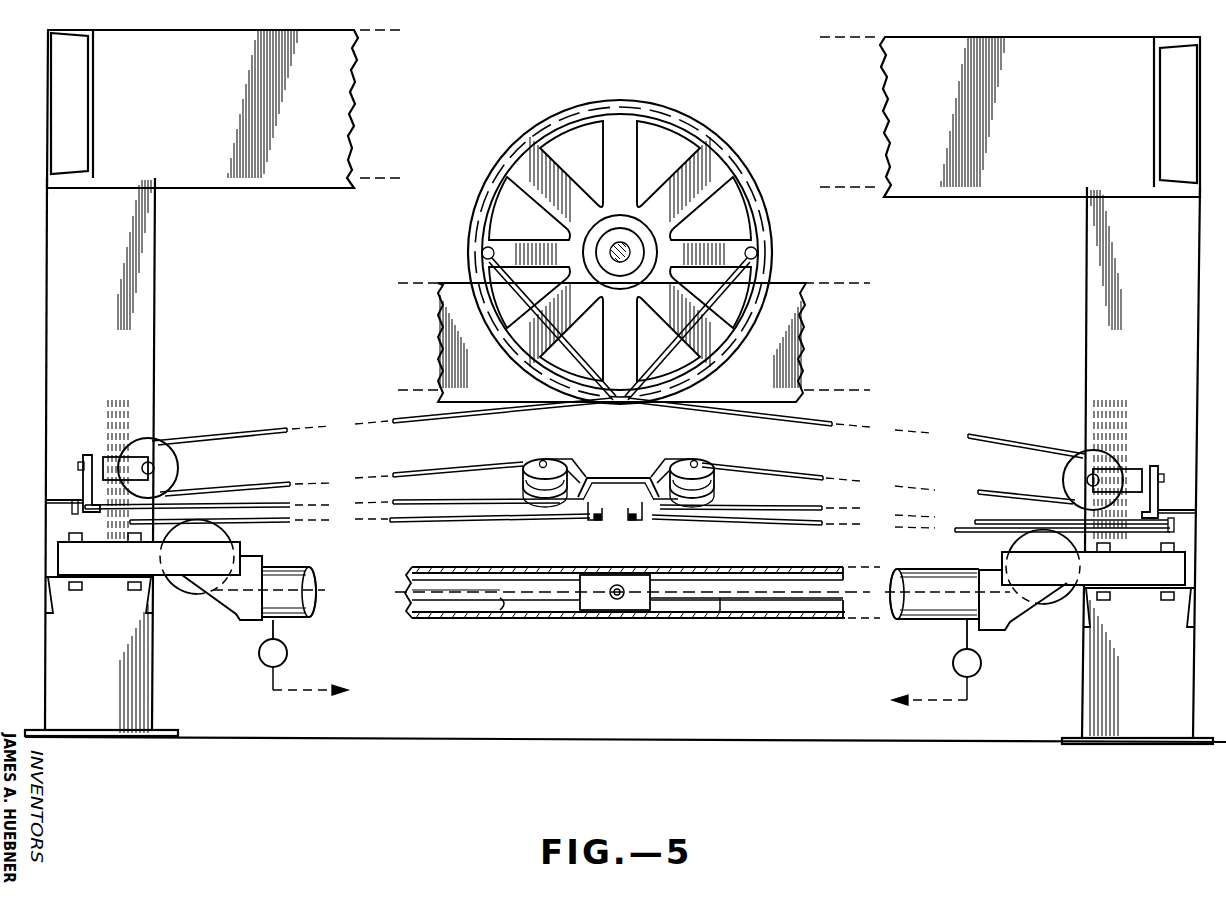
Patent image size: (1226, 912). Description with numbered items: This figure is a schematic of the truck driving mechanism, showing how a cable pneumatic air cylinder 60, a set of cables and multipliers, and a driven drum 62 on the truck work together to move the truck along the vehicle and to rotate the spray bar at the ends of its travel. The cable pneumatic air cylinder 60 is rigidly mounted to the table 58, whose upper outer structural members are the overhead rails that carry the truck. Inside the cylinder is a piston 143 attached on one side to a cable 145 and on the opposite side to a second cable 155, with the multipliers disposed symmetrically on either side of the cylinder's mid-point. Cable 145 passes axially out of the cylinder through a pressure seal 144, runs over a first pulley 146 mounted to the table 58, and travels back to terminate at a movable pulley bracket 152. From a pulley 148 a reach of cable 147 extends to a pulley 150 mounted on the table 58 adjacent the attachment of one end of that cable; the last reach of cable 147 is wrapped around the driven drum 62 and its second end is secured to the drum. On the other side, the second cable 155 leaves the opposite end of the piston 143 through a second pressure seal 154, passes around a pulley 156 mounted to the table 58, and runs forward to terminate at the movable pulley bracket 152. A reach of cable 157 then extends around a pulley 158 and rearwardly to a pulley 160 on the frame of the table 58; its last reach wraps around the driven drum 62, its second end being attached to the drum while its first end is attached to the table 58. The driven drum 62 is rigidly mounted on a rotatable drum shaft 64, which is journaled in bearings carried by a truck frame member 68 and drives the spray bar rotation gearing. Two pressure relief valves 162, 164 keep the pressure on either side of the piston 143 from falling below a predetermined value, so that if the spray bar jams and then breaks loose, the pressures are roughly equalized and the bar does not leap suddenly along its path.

The table 58 is at (1216, 49).
The cable pneumatic air cylinder 60 is at (748, 570).
The driven drum 62 is at (708, 165).
The rotatable drum shaft 64 is at (640, 250).
The truck frame member 68 is at (796, 286).
The piston 143 is at (600, 614).
The pressure seal 144 is at (1000, 630).
The cable 145 is at (724, 620).
The first pulley 146 is at (1062, 587).
The cable 147 is at (796, 472).
The pulley 148 is at (714, 489).
The pulley 150 is at (1080, 466).
The pulley bracket 152 is at (593, 478).
The second pressure seal 154 is at (252, 632).
The second cable 155 is at (513, 616).
The pulley 156 is at (180, 584).
The cable 157 is at (440, 470).
The pulley 158 is at (522, 482).
The pulley 160 is at (175, 450).
The pressure relief valve 162 is at (982, 664).
The pressure relief valve 164 is at (260, 657).